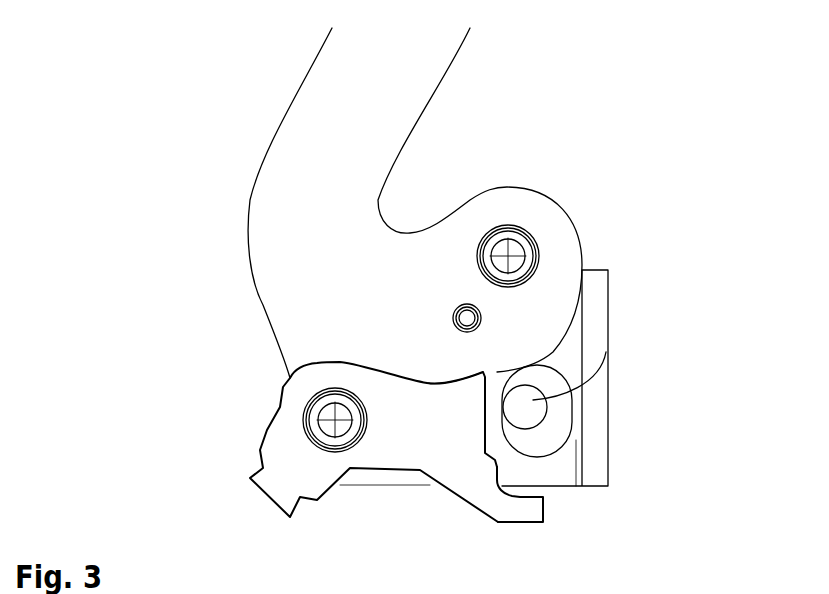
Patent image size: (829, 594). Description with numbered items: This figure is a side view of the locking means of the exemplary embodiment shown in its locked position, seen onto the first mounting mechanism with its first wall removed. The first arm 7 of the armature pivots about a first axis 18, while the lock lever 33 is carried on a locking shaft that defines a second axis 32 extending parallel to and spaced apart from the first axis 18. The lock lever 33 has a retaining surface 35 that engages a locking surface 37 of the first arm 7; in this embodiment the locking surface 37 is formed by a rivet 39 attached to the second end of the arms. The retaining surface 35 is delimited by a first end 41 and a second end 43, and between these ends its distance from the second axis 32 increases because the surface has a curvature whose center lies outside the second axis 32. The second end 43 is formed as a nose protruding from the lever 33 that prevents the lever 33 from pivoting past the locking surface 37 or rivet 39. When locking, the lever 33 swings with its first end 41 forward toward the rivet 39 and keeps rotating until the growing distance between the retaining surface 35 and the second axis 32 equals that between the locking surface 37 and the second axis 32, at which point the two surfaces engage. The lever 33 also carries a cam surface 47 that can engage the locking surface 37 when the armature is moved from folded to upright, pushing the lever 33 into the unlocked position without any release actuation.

The first arm 7 is at (366, 124).
The first axis 18 is at (512, 228).
The first end 41 is at (582, 268).
The rivet 39 is at (606, 352).
The locking surface 37 is at (503, 417).
The retaining surface 35 is at (502, 435).
The second end 43 is at (547, 503).
The lock lever 33 is at (454, 441).
The cam surface 47 is at (448, 383).
The second axis 32 is at (343, 447).